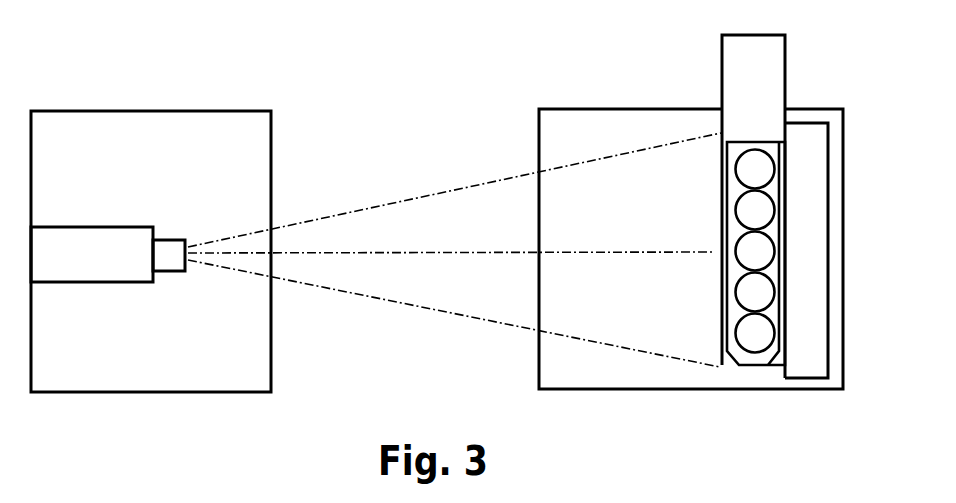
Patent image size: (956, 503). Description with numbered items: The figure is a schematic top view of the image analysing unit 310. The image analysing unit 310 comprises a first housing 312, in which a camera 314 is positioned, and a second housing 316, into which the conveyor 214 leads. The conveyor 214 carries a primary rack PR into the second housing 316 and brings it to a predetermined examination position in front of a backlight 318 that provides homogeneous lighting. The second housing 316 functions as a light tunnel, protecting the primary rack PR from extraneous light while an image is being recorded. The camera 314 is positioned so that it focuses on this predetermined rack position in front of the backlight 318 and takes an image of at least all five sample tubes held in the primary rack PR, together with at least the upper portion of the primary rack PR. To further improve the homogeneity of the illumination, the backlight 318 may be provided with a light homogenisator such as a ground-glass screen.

The image analysing unit 310 is at (327, 107).
The first housing 312 is at (109, 118).
The camera 314 is at (106, 278).
The second housing 316 is at (618, 118).
The conveyor 214 is at (776, 82).
The primary rack PR is at (732, 364).
The backlight 318 is at (815, 372).